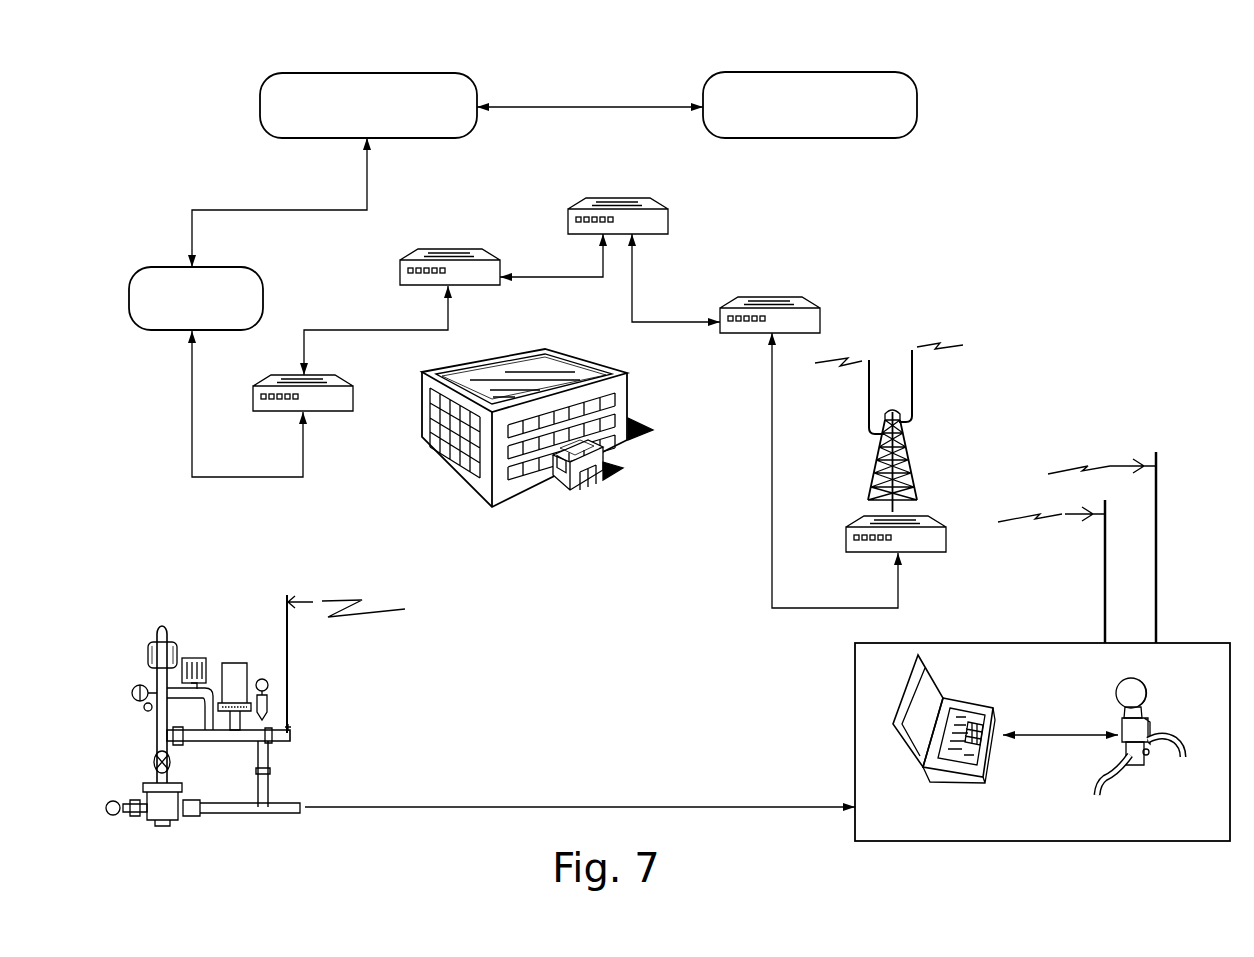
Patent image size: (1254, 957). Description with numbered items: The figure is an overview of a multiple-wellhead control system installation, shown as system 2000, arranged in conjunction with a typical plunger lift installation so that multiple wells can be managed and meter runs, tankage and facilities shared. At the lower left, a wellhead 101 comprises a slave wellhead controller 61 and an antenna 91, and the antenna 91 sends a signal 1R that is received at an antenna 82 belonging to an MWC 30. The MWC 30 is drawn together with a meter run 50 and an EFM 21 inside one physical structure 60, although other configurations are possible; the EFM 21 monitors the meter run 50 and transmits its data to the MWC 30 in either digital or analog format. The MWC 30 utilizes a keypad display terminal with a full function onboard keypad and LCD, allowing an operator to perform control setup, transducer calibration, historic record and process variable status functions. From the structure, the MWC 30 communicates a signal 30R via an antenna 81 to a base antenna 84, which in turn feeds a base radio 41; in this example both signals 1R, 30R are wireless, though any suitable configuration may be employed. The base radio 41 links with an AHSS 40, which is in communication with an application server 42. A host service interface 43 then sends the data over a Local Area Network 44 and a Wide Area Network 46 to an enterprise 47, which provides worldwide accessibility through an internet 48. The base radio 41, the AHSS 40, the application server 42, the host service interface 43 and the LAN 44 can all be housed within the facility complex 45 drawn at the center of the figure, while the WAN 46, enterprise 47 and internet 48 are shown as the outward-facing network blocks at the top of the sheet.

The system 2000 is at (982, 163).
The enterprise 47 is at (368, 72).
The internet 48 is at (810, 138).
The Wide Area Network (WAN) 46 is at (160, 267).
The host service interface 43 is at (458, 246).
The application server 42 is at (612, 198).
The AHSS 40 is at (760, 297).
The Local Area Network (LAN) 44 is at (265, 412).
The facility complex 45 is at (482, 486).
The base antenna 84 is at (910, 452).
The base radio 41 is at (846, 535).
The antenna 81 is at (1156, 537).
The signal 30R is at (1068, 474).
The antenna 82 is at (1105, 572).
The physical structure 60 is at (970, 643).
The MWC 30 is at (990, 773).
The EFM 21 is at (1146, 684).
The meter run 50 is at (1150, 753).
The wellhead 101 is at (275, 674).
The slave wellhead controller (SWC) 61 is at (197, 658).
The antenna 91 is at (290, 685).
The signal 1R is at (380, 608).